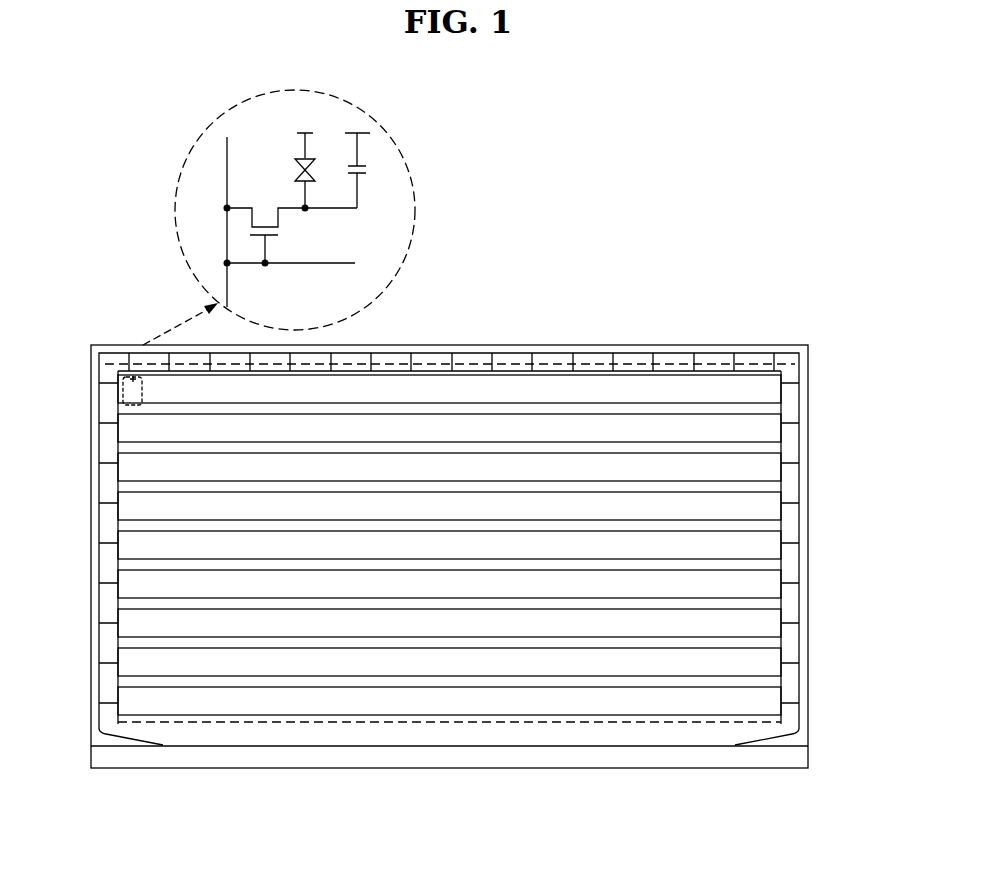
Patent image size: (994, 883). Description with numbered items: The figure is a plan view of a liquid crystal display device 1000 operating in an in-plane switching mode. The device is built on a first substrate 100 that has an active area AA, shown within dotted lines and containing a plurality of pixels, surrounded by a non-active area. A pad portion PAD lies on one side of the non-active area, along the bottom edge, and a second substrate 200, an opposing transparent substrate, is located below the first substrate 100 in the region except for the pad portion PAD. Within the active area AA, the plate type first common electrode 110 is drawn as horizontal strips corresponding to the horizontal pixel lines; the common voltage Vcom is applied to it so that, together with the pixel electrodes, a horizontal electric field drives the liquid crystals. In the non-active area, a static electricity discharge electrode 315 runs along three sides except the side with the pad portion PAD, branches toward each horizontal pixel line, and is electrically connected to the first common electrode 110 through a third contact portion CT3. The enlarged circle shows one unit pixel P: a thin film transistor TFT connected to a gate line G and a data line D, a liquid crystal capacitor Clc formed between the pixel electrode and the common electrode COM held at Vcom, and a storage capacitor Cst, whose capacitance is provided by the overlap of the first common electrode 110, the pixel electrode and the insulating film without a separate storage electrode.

The first substrate 100 is at (787, 768).
The second substrate 200 is at (795, 746).
The first common electrode 110 is at (760, 402).
The static electricity discharge electrode 315 is at (99, 460).
The liquid crystal display device 1000 is at (855, 750).
The third contact portion CT3 is at (119, 386).
The active area AA is at (749, 719).
The pad portion PAD is at (86, 746).
The pixel P is at (299, 184).
The data line D is at (224, 211).
The gate line G is at (300, 264).
The thin film transistor TFT is at (292, 234).
The common voltage Vcom is at (305, 136).
The liquid crystal capacitor Clc is at (316, 183).
The common electrode COM is at (298, 157).
The storage capacitor capacitance Cst is at (369, 170).